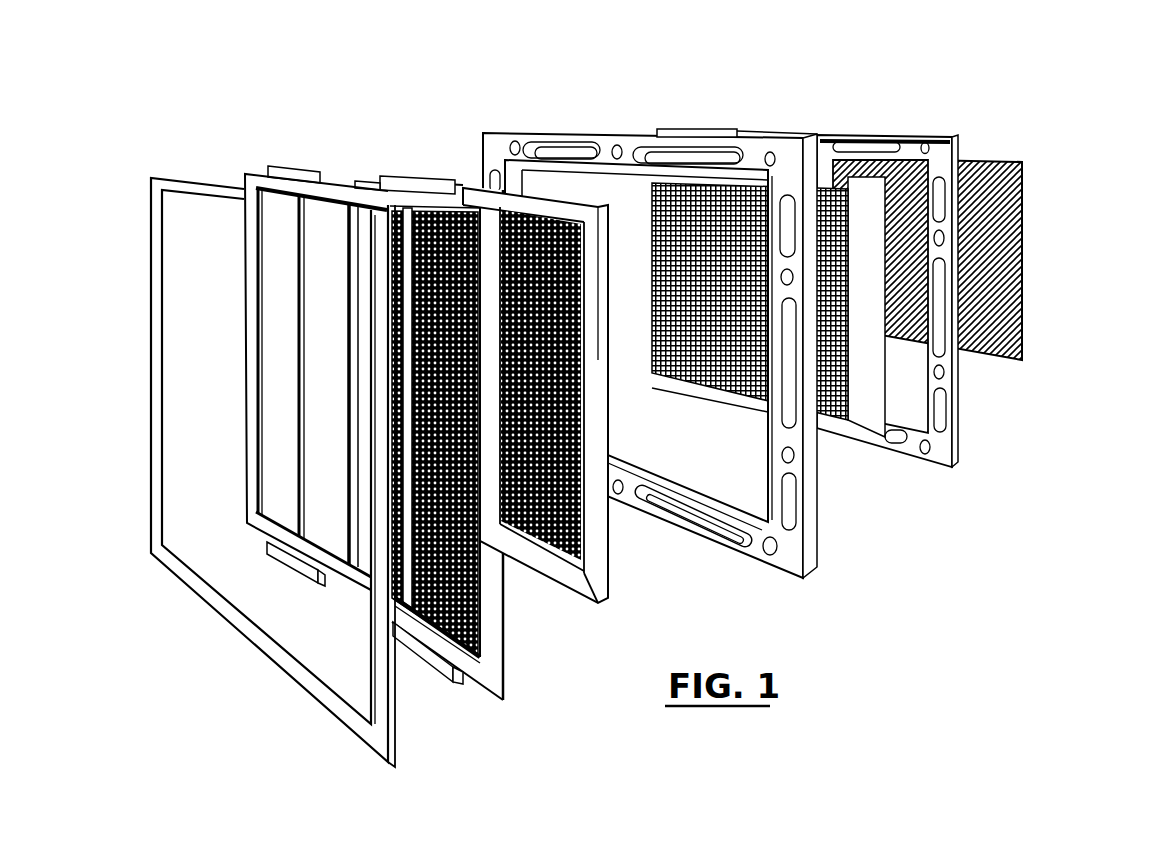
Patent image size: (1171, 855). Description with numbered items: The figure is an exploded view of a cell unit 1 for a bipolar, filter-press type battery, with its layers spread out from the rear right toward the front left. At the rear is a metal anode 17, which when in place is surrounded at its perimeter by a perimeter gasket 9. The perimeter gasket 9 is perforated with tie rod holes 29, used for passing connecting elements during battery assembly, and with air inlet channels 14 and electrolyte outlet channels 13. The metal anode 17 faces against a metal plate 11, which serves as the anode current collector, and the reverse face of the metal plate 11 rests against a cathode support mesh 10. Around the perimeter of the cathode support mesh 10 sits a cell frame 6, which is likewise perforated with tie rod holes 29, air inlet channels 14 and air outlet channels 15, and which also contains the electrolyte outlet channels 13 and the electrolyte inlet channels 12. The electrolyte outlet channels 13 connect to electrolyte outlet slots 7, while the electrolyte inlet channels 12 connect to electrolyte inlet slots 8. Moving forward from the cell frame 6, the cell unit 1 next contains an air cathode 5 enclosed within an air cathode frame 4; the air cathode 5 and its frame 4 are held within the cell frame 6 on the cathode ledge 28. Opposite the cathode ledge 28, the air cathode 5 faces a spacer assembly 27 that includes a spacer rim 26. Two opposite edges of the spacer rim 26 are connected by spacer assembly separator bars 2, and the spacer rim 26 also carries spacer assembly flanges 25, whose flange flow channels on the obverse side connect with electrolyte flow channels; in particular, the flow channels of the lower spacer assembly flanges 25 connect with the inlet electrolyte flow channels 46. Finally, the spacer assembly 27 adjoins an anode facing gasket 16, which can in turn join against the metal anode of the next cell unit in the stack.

The cell unit 1 is at (650, 96).
The spacer assembly separator bars 2 is at (347, 427).
The air cathode frame 4 is at (590, 560).
The air cathode 5 is at (522, 532).
The cell frame 6 is at (557, 135).
The electrolyte outlet slots 7 is at (565, 158).
The electrolyte inlet slots 8 is at (692, 502).
The perimeter gasket 9 is at (945, 153).
The cathode support mesh 10 is at (850, 363).
The metal plate 11 is at (865, 278).
The electrolyte inlet channels 12 is at (677, 512).
The electrolyte outlet channels 13 is at (630, 137).
The air inlet channels 14 is at (792, 382).
The air outlet channels 15 is at (483, 165).
The anode facing gasket 16 is at (307, 678).
The metal anode 17 is at (1022, 202).
The spacer assembly flanges 25 is at (273, 172).
The spacer rim 26 is at (268, 525).
The spacer assembly 27 is at (512, 676).
The cathode ledge 28 is at (767, 492).
The tie rod holes 29 is at (780, 550).
The inlet electrolyte flow channels 46 is at (425, 617).